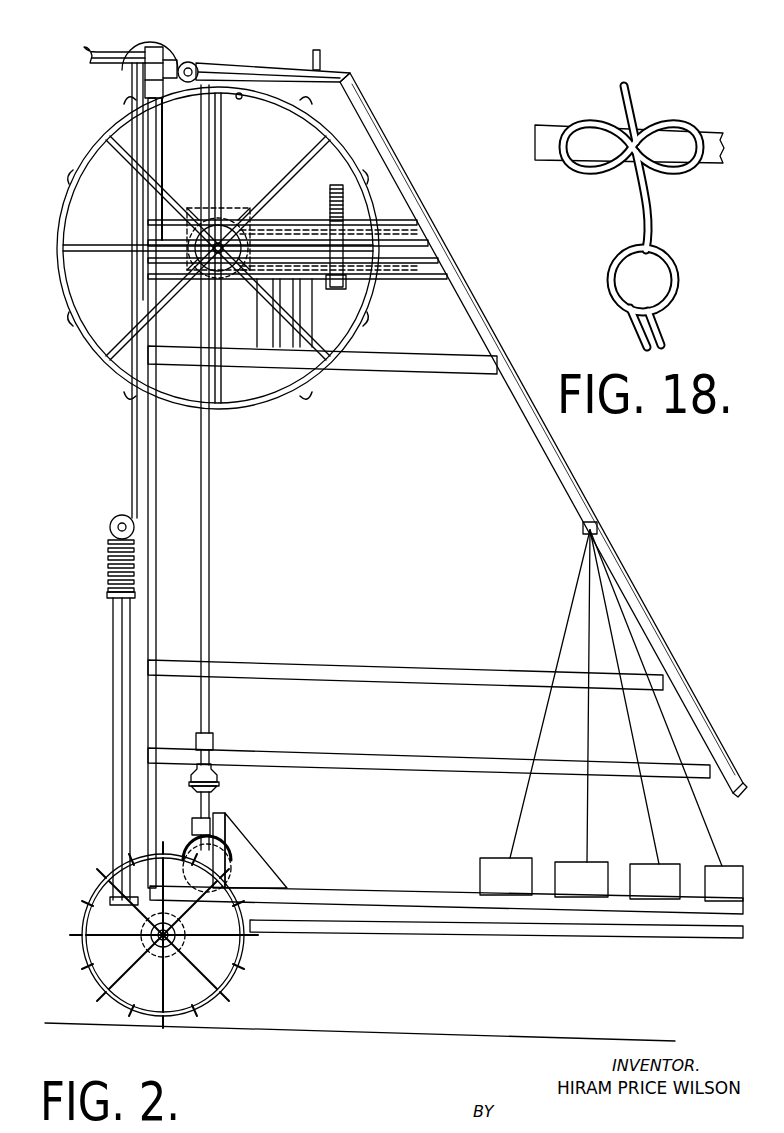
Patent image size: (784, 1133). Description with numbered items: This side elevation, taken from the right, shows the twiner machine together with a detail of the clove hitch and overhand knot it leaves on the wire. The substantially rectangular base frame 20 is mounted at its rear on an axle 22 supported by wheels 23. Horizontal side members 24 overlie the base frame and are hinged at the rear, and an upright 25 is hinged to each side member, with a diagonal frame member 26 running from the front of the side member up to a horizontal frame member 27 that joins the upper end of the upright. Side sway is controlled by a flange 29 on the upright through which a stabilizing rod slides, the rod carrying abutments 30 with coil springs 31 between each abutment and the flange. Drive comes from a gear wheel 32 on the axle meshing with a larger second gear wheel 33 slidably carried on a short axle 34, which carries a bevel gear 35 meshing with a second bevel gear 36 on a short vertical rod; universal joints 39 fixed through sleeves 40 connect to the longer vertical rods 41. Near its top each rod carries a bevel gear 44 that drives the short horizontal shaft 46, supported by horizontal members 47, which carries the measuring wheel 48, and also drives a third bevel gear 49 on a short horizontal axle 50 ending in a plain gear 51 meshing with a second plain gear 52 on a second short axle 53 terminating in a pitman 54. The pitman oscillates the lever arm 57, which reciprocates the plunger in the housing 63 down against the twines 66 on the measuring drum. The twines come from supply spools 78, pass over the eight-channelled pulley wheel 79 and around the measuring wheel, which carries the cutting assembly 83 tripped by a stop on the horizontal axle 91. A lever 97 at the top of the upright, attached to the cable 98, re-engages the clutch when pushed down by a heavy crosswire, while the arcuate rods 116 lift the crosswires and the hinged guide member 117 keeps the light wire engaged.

The base frame 20 is at (393, 932).
The axle 22 is at (155, 955).
The wheels 23 is at (240, 985).
The horizontal side members 24 is at (367, 891).
The upright 25 is at (156, 615).
The diagonal frame members 26 is at (560, 456).
The horizontal frame member 27 is at (343, 70).
The flange 29 is at (108, 566).
The abutments 30 is at (110, 531).
The coil springs 31 is at (108, 594).
The gear wheel 32 is at (148, 938).
The second gear wheel 33 is at (212, 935).
The short axle 34 is at (178, 960).
The bevel gear 35 is at (192, 832).
The second bevel gear 36 is at (256, 845).
The universal joints 39 is at (219, 778).
The sleeves 40 is at (213, 748).
The longer vertical rods 41 is at (211, 549).
The bevel gear 44 is at (236, 206).
The short horizontal shaft 46 is at (205, 282).
The horizontal members 47 is at (410, 235).
The measuring wheel 48 is at (365, 330).
The third bevel gear 49 is at (283, 206).
The short horizontal axle 50 is at (290, 228).
The plain gear 51 is at (344, 209).
The second plain gear 52 is at (324, 284).
The second short axle 53 is at (308, 305).
The pitman 54 is at (135, 273).
The lever arm 57 is at (135, 213).
The housing 63 is at (163, 52).
The twines 66 is at (520, 800).
The supply spools 78 is at (527, 866).
The pulley wheel 79 is at (196, 66).
The cutting assembly 83 is at (166, 373).
The horizontal axle 91 is at (240, 100).
The lever 97 is at (93, 47).
The cable 98 is at (133, 458).
The arcuate rods 116 is at (142, 45).
The hinged guide member 117 is at (319, 50).